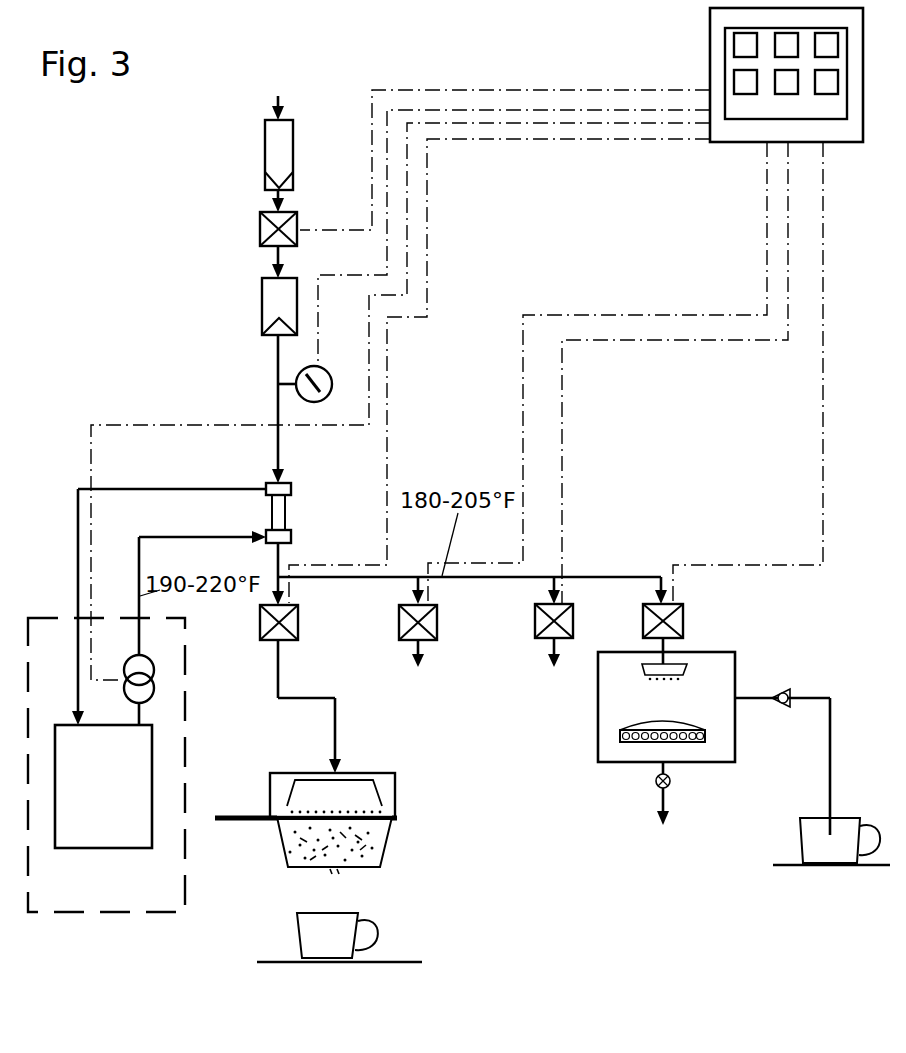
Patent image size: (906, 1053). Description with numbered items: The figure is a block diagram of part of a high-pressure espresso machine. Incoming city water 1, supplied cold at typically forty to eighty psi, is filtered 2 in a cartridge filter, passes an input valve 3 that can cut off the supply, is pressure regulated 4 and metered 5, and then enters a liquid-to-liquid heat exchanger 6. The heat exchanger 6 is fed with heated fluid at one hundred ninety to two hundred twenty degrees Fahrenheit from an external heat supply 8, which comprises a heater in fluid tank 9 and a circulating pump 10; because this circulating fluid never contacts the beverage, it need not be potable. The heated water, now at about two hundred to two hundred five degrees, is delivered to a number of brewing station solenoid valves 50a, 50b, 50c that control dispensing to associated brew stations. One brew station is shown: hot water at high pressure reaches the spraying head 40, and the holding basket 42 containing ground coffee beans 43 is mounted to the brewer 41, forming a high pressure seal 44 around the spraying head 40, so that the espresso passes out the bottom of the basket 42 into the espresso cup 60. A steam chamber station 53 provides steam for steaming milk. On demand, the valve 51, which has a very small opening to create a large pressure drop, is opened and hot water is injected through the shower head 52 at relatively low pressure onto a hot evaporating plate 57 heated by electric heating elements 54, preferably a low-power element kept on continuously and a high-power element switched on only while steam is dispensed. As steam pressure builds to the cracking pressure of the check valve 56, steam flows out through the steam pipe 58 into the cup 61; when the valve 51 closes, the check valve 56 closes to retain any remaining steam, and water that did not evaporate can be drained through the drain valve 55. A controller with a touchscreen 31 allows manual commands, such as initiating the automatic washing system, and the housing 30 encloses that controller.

The incoming water 1 is at (226, 38).
The filter 2 is at (262, 143).
The input valve 3 is at (258, 232).
The pressure regulator 4 is at (262, 301).
The meter 5 is at (325, 372).
The heat exchanger 6 is at (291, 491).
The external heat supply 8 is at (65, 617).
The heater in fluid tank 9 is at (64, 725).
The circulating pump 10 is at (151, 680).
The controller 30 is at (712, 68).
The touchscreen 31 is at (745, 45).
The spraying head 40 is at (372, 780).
The brewer 41 is at (395, 795).
The holding basket 42 is at (385, 840).
The ground coffee beans 43 is at (352, 848).
The high pressure seal 44 is at (395, 816).
The brewing station solenoid valve 50a is at (260, 625).
The brewing station solenoid valve 50b is at (399, 623).
The brewing station solenoid valve 50c is at (535, 623).
The valve 51 is at (643, 623).
The shower head 52 is at (688, 668).
The steam chamber station 53 is at (602, 719).
The electric heating elements 54 is at (620, 740).
The drain valve 55 is at (656, 787).
The check valve 56 is at (784, 692).
The evaporating plate 57 is at (706, 726).
The steam pipe 58 is at (830, 832).
The espresso cup 60 is at (295, 925).
The cup 61 is at (797, 828).